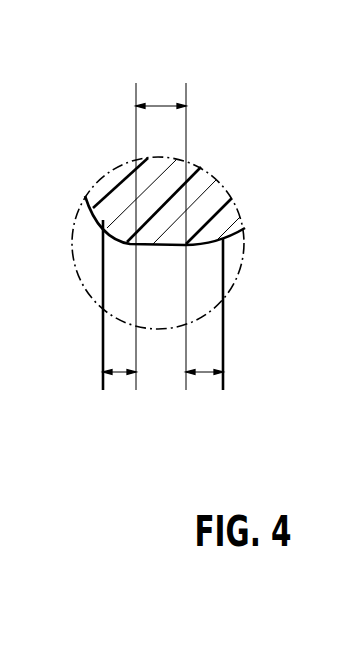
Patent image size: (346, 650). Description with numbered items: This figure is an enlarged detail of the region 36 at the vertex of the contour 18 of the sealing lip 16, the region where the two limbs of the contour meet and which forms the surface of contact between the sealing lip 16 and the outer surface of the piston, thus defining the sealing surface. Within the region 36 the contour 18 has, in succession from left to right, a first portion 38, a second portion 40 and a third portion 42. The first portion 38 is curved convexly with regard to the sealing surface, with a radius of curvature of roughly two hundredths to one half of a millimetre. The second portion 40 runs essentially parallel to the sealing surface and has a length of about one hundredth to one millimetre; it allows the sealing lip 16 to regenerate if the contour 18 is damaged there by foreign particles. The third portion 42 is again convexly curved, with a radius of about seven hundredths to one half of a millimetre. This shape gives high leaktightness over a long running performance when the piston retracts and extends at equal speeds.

The sealing lip 16 is at (112, 182).
The contour 18 is at (158, 246).
The region 36 is at (241, 196).
The first portion 38 is at (122, 374).
The second portion 40 is at (162, 103).
The third portion 42 is at (207, 374).